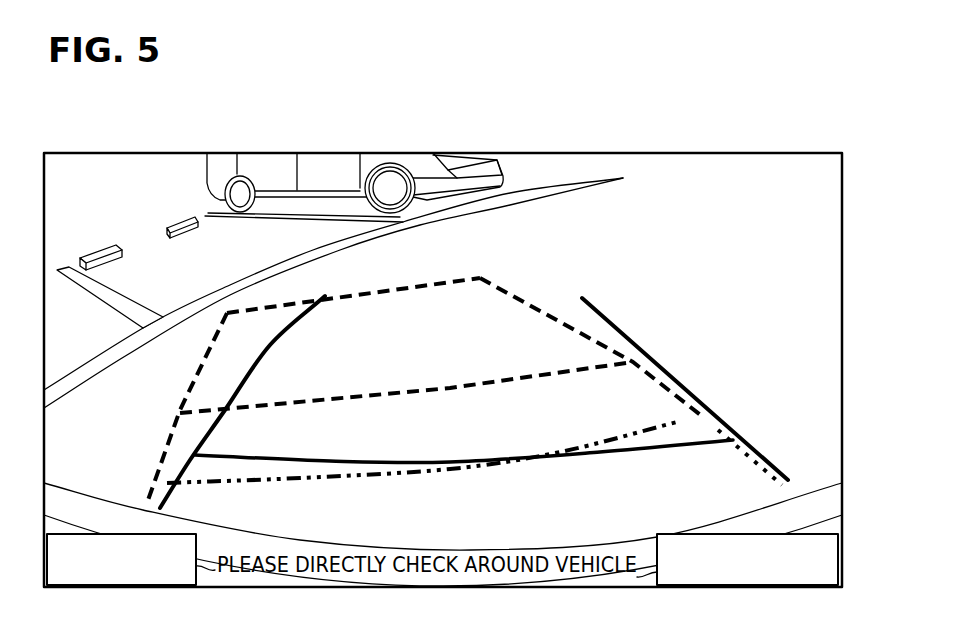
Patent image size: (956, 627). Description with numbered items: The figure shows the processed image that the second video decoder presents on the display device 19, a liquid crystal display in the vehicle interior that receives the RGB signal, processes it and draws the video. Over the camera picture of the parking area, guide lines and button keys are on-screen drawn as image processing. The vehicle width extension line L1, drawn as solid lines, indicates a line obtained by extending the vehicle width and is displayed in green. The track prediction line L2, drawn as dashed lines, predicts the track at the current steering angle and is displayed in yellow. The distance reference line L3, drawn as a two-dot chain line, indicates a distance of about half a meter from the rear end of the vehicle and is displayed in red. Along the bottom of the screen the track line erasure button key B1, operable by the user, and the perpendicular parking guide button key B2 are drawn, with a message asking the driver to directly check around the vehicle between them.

The display device 19 is at (726, 153).
The vehicle width extension line L1 is at (632, 334).
The track prediction line L2 is at (505, 283).
The distance reference line L3 is at (598, 435).
The track line erasure button key B1 is at (107, 533).
The perpendicular parking guide button key B2 is at (717, 533).